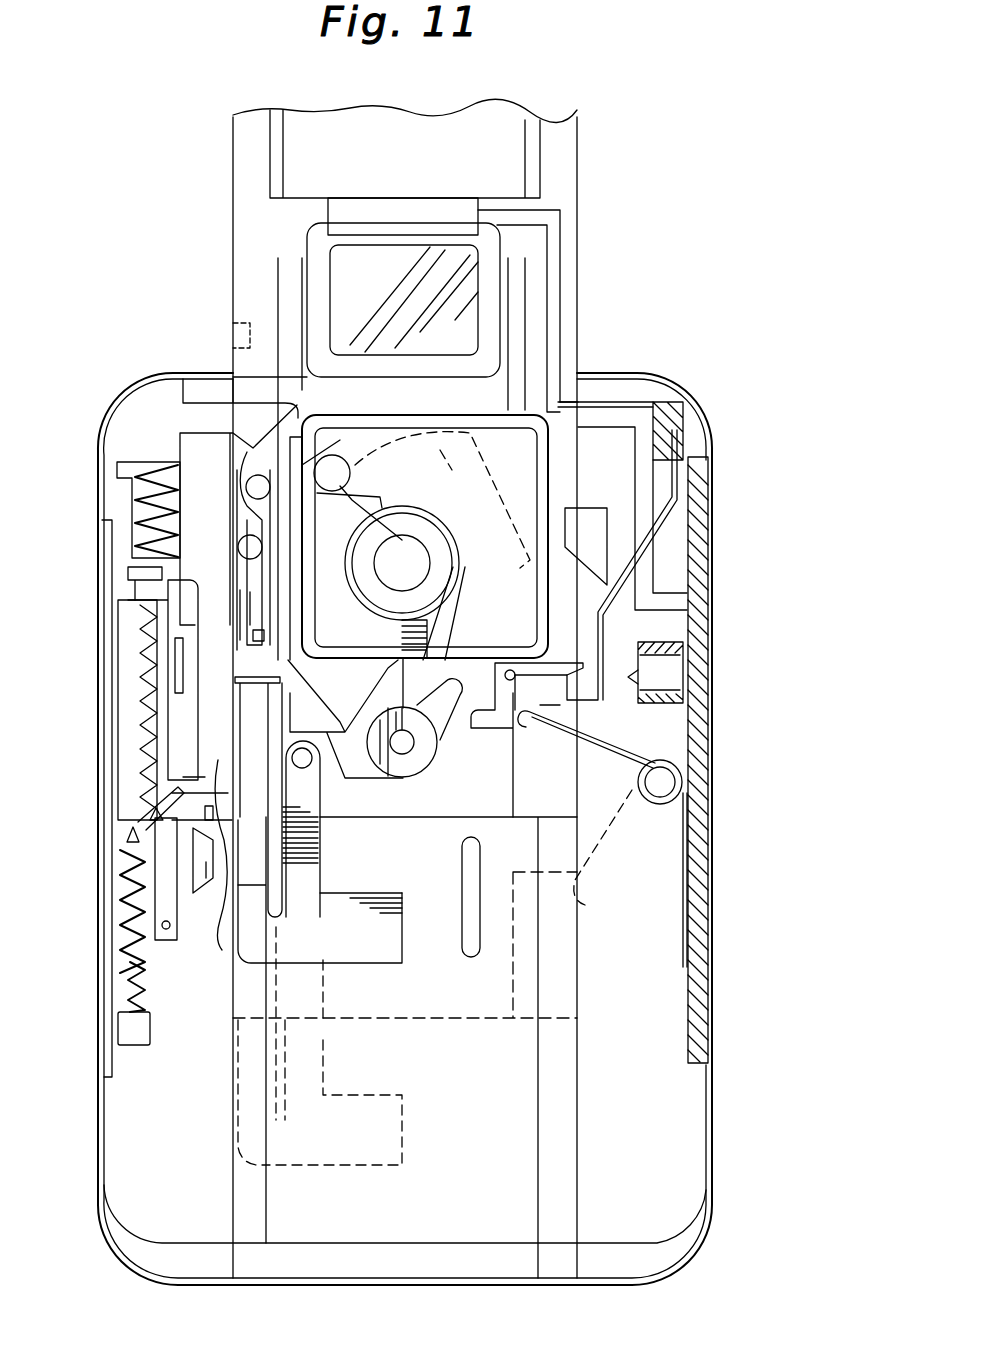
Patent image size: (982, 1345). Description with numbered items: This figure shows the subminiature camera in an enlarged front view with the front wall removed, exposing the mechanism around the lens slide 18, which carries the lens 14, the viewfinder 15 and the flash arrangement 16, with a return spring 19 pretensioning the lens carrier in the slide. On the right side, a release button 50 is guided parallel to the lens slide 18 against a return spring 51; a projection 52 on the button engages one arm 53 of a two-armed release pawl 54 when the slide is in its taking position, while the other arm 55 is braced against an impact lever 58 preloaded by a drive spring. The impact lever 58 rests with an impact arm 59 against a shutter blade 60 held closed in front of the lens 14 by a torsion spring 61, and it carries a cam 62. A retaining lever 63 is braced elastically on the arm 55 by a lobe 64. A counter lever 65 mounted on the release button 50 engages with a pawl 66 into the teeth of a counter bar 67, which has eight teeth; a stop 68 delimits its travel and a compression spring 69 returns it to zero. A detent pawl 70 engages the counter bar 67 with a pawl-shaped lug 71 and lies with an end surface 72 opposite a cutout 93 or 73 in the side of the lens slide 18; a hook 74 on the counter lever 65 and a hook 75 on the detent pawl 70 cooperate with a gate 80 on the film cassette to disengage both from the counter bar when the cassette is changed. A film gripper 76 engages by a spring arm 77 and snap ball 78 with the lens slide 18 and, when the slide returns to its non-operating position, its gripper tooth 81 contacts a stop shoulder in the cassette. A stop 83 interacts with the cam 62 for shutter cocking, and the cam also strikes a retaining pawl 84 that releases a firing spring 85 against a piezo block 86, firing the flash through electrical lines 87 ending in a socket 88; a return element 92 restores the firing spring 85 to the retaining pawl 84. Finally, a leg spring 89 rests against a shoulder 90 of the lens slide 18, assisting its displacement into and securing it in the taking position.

The lens 14 is at (420, 585).
The viewfinder 15 is at (460, 255).
The flash arrangement 16 is at (530, 158).
The lens slide 18 is at (590, 132).
The return spring 19 is at (515, 330).
The release button 50 is at (150, 395).
The return spring 51 is at (135, 490).
The projection 52 is at (250, 423).
The arm 53 is at (277, 433).
The release pawl 54 is at (270, 567).
The arm 55 is at (305, 713).
The impact lever 58 is at (415, 765).
The impact arm 59 is at (390, 678).
The shutter blade 60 is at (445, 614).
The torsion spring 61 is at (375, 485).
The cam 62 is at (455, 640).
The retaining lever 63 is at (250, 596).
The lobe 64 is at (258, 636).
The counter lever 65 is at (178, 710).
The pawl 66 is at (158, 875).
The counter bar 67 is at (168, 772).
The stop 68 is at (140, 1028).
The compression spring 69 is at (130, 982).
The detent pawl 70 is at (138, 910).
The pawl-shaped lug 71 is at (125, 840).
The end surface 72 is at (300, 875).
The cutout 73 is at (295, 850).
The hook 74 is at (209, 806).
The hook 75 is at (216, 935).
The film gripper 76 is at (360, 950).
The spring arm 77 is at (300, 828).
The snap ball 78 is at (310, 780).
The gate 80 is at (207, 895).
The gripper tooth 81 is at (150, 800).
The stop 83 is at (475, 950).
The retaining pawl 84 is at (490, 715).
The firing spring 85 is at (670, 530).
The piezo block 86 is at (668, 680).
The electrical lines 87 is at (557, 292).
The socket 88 is at (460, 215).
The leg spring 89 is at (680, 755).
The shoulder 90 is at (570, 720).
The return element 92 is at (600, 555).
The cutout 93 is at (235, 335).